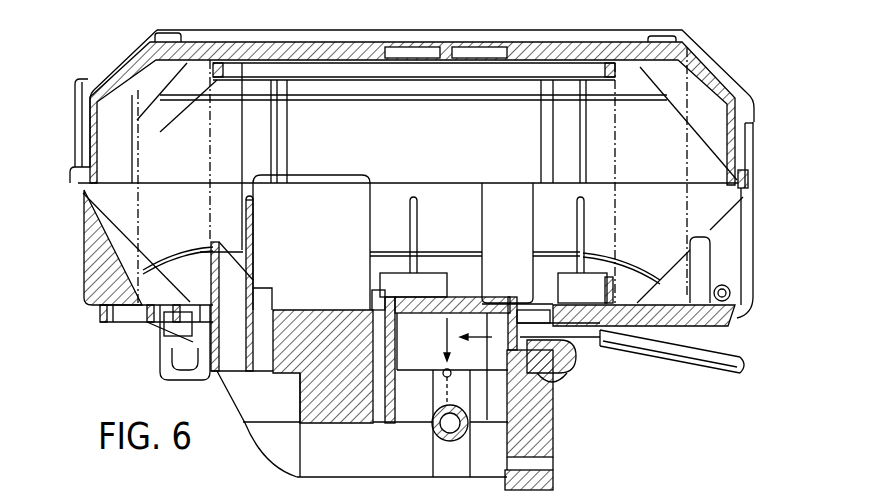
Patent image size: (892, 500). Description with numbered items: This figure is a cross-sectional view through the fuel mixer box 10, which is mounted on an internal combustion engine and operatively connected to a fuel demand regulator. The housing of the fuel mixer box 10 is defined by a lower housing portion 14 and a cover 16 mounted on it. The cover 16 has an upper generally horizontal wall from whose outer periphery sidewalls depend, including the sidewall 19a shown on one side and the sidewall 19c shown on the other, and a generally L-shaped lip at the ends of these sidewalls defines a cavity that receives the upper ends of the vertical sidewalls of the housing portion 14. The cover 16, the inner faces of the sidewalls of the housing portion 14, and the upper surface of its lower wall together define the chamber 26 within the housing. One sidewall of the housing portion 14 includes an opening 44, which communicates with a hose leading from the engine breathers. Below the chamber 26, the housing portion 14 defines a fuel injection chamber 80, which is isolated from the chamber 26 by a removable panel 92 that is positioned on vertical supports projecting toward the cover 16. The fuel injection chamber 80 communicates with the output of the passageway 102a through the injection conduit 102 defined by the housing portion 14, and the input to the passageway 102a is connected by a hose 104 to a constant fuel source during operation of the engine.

The fuel mixer box 10 is at (758, 341).
The housing portion 14 is at (82, 313).
The cover 16 is at (726, 56).
The sidewall 19a is at (82, 128).
The sidewall 19c is at (746, 126).
The chamber 26 is at (432, 141).
The opening 44 is at (748, 296).
The fuel injection chamber 80 is at (413, 408).
The removable panel 92 is at (457, 304).
The injection conduit 102 is at (568, 372).
The passageway 102a is at (553, 390).
The hose 104 is at (680, 362).